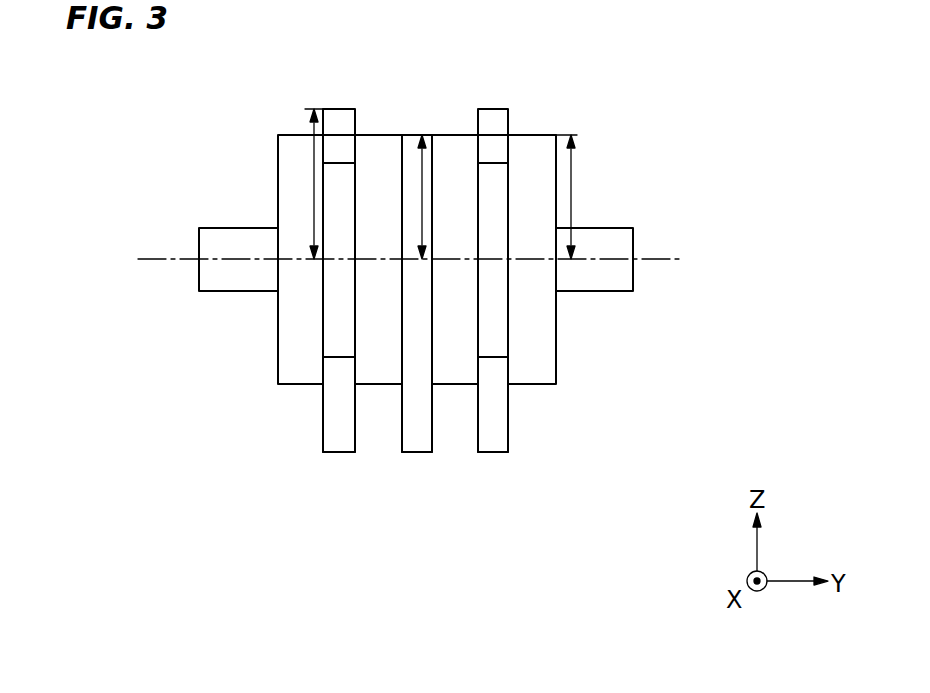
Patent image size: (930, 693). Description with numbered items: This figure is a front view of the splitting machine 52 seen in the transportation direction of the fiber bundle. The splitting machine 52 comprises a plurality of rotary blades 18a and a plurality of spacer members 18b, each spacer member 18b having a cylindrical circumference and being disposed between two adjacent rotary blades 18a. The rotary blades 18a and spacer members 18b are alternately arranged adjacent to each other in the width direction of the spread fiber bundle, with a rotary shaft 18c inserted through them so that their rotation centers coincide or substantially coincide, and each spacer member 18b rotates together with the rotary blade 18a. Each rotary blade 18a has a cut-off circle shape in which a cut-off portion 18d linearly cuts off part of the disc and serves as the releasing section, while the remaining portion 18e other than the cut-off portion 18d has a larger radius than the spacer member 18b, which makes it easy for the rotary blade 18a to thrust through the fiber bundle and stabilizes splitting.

The splitting machine 52 is at (650, 81).
The rotary blade 18a is at (342, 452).
The spacer member 18b is at (287, 135).
The rotary shaft 18c is at (623, 228).
The cut-off portion 18d is at (410, 133).
The portion other than the cut-off portion 18e is at (335, 418).